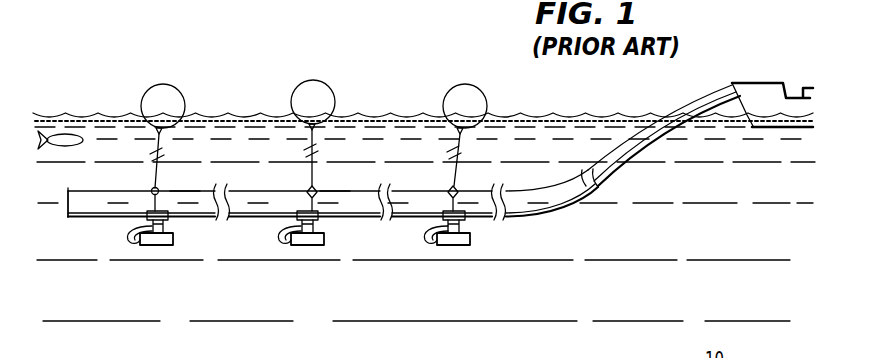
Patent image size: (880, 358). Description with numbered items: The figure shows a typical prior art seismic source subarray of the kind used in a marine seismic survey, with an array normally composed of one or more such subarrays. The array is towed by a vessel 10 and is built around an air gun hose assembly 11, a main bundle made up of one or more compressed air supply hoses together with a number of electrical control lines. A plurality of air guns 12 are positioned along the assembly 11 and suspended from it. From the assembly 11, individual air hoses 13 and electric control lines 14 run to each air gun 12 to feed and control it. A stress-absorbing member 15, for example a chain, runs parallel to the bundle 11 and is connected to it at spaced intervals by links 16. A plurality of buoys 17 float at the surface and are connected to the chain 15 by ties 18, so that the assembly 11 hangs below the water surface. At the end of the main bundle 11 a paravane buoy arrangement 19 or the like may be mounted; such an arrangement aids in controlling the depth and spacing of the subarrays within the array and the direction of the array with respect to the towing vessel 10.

The vessel 10 is at (743, 90).
The air gun hose assembly 11 is at (245, 218).
The air gun 12 is at (170, 245).
The individual air hose 13 is at (126, 234).
The electric control line 14 is at (134, 236).
The stress-absorbing member 15 is at (183, 191).
The link 16 is at (152, 190).
The buoy 17 is at (167, 90).
The tie 18 is at (160, 146).
The paravane buoy arrangement 19 is at (68, 191).